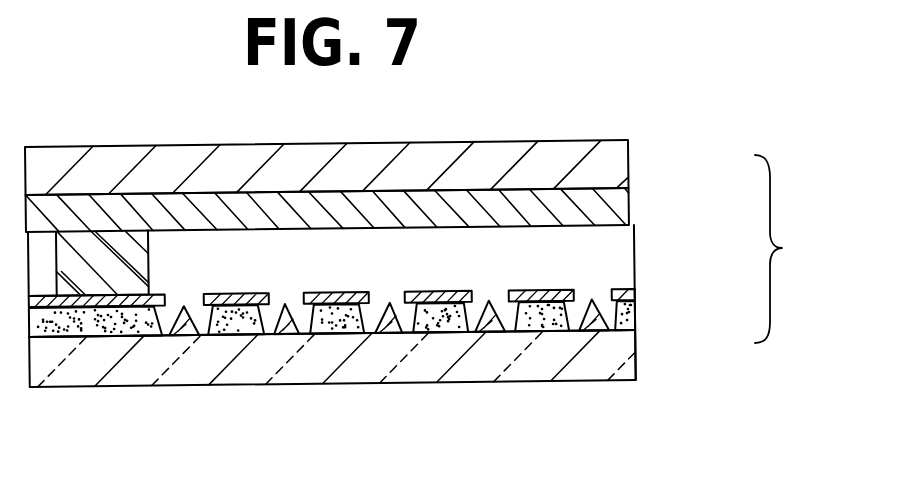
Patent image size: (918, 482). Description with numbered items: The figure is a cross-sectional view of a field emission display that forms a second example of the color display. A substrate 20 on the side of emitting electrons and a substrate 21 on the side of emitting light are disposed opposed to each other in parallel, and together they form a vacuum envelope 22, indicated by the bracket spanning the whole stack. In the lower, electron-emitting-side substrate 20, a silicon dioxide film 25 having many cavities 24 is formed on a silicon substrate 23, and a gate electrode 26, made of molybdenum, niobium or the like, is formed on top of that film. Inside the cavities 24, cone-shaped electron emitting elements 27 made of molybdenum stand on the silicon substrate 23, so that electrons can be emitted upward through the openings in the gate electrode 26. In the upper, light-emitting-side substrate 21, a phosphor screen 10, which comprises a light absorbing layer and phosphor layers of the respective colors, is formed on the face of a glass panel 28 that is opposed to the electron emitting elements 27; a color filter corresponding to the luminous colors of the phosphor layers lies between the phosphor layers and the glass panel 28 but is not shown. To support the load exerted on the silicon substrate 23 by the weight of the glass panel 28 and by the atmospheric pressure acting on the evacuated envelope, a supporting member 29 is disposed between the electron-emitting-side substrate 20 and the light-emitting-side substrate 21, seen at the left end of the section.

The glass panel 28 is at (612, 162).
The substrate on the side of emitting light 21 is at (663, 182).
The phosphor screen 10 is at (620, 212).
The gate electrode 26 is at (545, 293).
The substrate on the side of emitting electrons 20 is at (652, 315).
The vacuum envelope 22 is at (790, 249).
The supporting member 29 is at (100, 285).
The electron emitting elements 27 is at (283, 337).
The cavities 24 is at (511, 334).
The silicon substrate 23 is at (544, 363).
The silicon dioxide film 25 is at (553, 334).